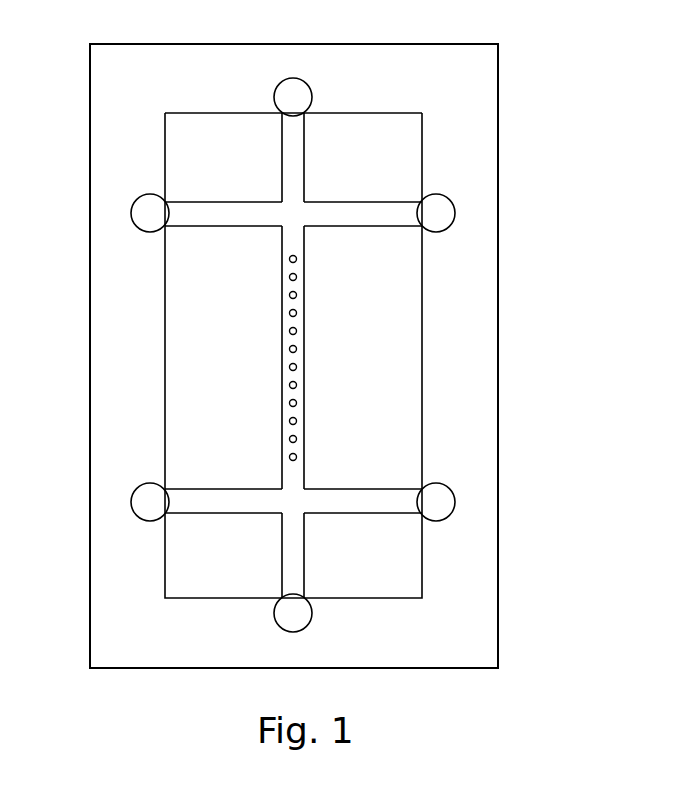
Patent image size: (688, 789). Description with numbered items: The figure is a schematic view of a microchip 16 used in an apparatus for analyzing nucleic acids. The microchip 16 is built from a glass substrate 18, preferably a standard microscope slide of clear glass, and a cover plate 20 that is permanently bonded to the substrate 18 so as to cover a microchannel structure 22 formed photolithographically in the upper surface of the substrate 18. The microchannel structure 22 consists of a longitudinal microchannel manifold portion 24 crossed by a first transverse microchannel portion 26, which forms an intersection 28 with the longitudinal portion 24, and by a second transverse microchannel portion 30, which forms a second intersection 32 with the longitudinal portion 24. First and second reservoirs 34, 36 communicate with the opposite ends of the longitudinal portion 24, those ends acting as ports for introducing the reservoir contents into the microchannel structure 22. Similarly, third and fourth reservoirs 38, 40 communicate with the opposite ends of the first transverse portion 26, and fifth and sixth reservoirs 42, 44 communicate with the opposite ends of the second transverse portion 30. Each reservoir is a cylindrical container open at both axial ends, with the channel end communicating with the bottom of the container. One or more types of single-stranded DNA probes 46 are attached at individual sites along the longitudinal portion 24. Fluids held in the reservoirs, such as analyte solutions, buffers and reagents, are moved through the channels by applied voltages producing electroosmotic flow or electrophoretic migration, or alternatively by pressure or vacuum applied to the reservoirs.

The microchip 16 is at (537, 165).
The glass substrate 18 is at (499, 435).
The cover plate 20 is at (422, 352).
The microchannel structure 22 is at (340, 178).
The longitudinal microchannel manifold portion 24 is at (308, 273).
The first transverse microchannel portion 26 is at (230, 200).
The intersection 28 is at (289, 213).
The second transverse microchannel portion 30 is at (230, 487).
The intersection 32 is at (286, 500).
The first reservoir 34 is at (293, 78).
The second reservoir 36 is at (293, 632).
The third reservoir 38 is at (131, 209).
The fourth reservoir 40 is at (455, 212).
The fifth reservoir 42 is at (131, 503).
The sixth reservoir 44 is at (455, 502).
The single-stranded DNA probes 46 is at (296, 349).